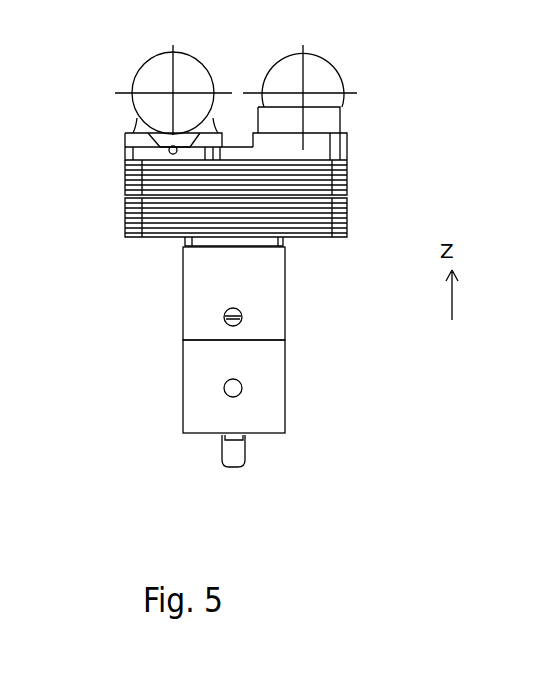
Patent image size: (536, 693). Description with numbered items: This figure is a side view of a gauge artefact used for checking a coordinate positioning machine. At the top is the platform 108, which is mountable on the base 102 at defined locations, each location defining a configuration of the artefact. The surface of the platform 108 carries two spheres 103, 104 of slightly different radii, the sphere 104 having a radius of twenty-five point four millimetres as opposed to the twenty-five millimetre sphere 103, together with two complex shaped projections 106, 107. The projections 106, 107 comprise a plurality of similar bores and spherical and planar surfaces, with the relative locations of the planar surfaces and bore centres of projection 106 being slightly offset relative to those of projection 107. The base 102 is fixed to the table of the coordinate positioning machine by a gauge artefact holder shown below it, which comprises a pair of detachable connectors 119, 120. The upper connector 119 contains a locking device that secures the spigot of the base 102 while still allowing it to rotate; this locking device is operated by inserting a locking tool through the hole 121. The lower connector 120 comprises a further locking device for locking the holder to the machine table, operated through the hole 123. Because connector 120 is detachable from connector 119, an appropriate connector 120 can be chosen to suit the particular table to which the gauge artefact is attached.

The base 102 is at (348, 218).
The sphere 103 is at (343, 73).
The sphere 104 is at (143, 66).
The complex shaped projection 106 is at (134, 118).
The complex shaped projection 107 is at (343, 122).
The platform 108 is at (350, 178).
The connector 119 is at (286, 272).
The connector 120 is at (286, 362).
The hole 121 is at (242, 317).
The hole 123 is at (242, 389).